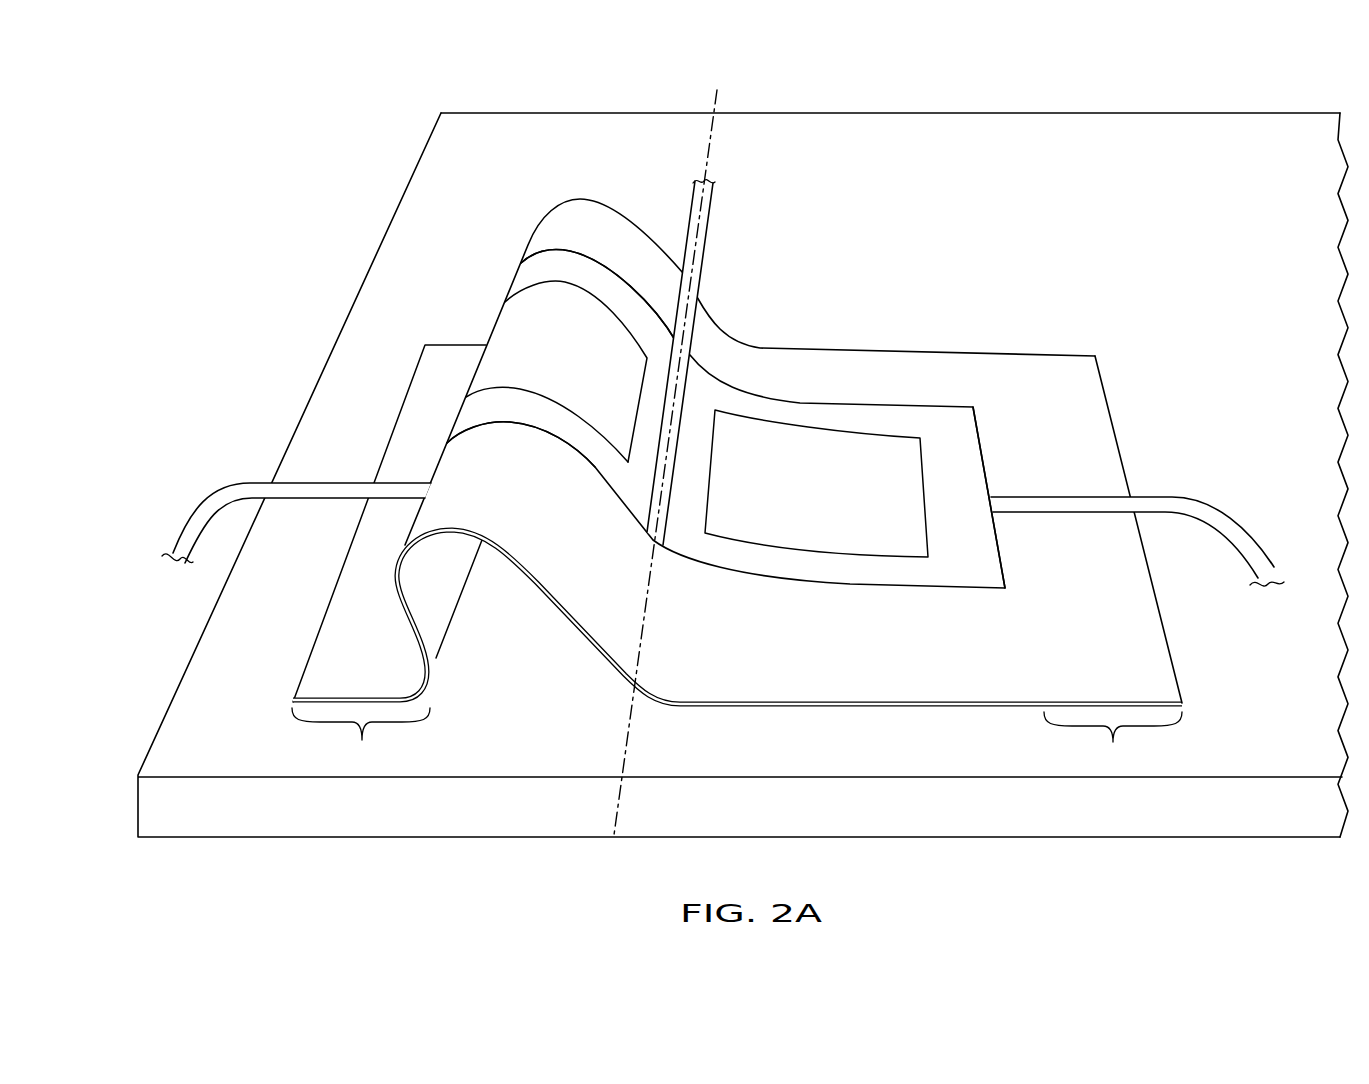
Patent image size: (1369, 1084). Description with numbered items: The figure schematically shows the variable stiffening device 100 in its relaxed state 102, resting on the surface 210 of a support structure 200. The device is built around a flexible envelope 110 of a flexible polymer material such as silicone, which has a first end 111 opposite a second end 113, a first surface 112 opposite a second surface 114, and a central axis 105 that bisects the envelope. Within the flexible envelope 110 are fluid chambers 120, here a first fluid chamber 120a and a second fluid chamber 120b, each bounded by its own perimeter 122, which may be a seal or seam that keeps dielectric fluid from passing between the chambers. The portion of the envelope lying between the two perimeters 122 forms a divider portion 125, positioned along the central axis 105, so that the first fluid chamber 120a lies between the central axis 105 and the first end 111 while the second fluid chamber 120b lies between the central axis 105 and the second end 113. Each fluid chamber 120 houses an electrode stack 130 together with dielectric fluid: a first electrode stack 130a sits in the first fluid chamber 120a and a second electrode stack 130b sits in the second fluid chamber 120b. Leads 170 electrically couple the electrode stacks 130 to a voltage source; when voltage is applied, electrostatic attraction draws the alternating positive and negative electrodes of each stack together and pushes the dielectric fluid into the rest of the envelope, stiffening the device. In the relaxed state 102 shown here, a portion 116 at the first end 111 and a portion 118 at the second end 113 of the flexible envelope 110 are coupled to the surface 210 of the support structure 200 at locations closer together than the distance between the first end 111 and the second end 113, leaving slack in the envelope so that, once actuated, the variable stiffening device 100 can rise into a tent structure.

The variable stiffening device 100 is at (1170, 165).
The relaxed state 102 is at (903, 245).
The central axis 105 is at (711, 133).
The flexible envelope 110 is at (774, 486).
The first end 111 is at (297, 683).
The first surface 112 is at (1042, 656).
The second end 113 is at (1181, 690).
The second surface 114 is at (437, 618).
The portion at the first end 116 is at (361, 735).
The portion at the second end 118 is at (1113, 743).
The fluid chamber 120 is at (764, 409).
The first fluid chamber 120a is at (964, 398).
The second fluid chamber 120b is at (604, 257).
The perimeter 122 is at (510, 424).
The divider portion 125 is at (675, 453).
The electrode stack 130 is at (742, 468).
The first electrode stack 130a is at (880, 557).
The second electrode stack 130b is at (607, 444).
The leads 170 is at (220, 486).
The support structure 200 is at (701, 475).
The surface 210 is at (1060, 220).